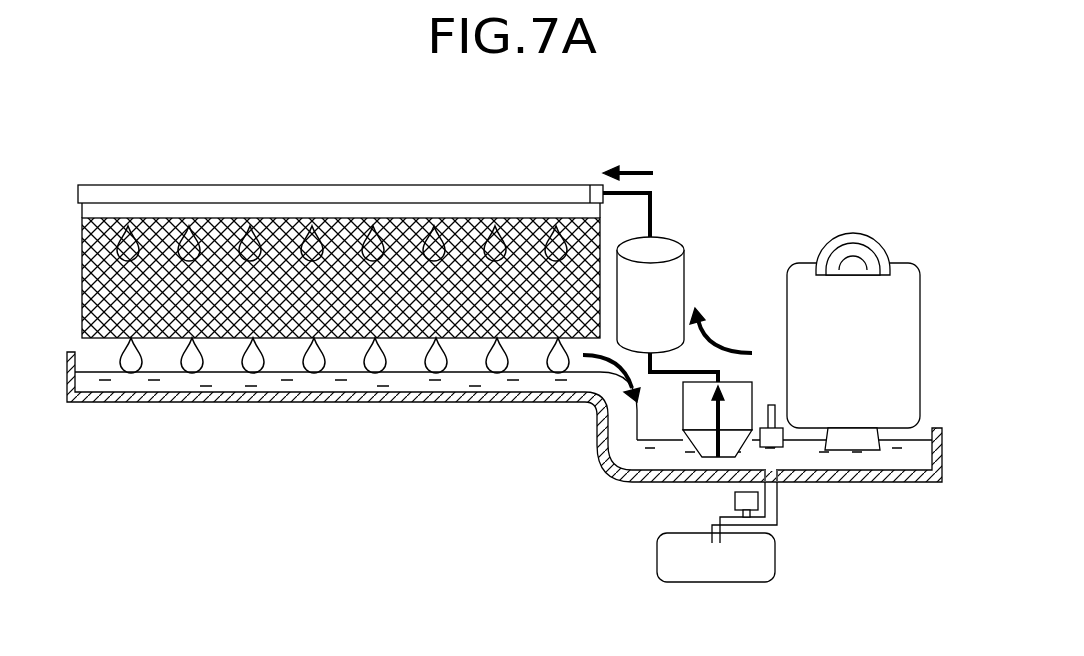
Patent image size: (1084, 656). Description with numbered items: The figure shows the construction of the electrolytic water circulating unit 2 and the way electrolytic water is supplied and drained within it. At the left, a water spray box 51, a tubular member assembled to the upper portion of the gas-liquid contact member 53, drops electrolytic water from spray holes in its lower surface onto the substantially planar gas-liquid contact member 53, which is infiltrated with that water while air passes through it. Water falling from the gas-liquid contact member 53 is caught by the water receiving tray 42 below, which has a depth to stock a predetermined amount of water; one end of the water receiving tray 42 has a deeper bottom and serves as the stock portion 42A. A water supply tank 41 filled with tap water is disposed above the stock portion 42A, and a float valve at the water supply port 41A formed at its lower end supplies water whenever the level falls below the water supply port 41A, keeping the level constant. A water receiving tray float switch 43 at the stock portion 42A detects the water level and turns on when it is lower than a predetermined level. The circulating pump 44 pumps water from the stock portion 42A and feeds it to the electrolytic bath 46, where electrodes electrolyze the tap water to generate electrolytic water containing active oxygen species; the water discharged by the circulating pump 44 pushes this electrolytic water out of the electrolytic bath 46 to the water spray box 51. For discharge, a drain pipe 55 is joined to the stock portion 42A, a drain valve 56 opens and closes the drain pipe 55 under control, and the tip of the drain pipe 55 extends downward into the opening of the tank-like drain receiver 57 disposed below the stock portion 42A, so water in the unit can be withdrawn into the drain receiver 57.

The electrolytic water circulating unit 2 is at (750, 163).
The water supply tank 41 is at (905, 272).
The water supply port 41A is at (858, 452).
The water receiving tray 42 is at (343, 402).
The stock portion 42A is at (828, 482).
The water receiving tray float switch 43 is at (770, 405).
The circulating pump 44 is at (690, 402).
The electrolytic bath 46 is at (677, 287).
The water spray box 51 is at (415, 193).
The gas-liquid contact member 53 is at (290, 217).
The drain pipe 55 is at (780, 498).
The drain valve 56 is at (735, 498).
The drain receiver 57 is at (717, 583).